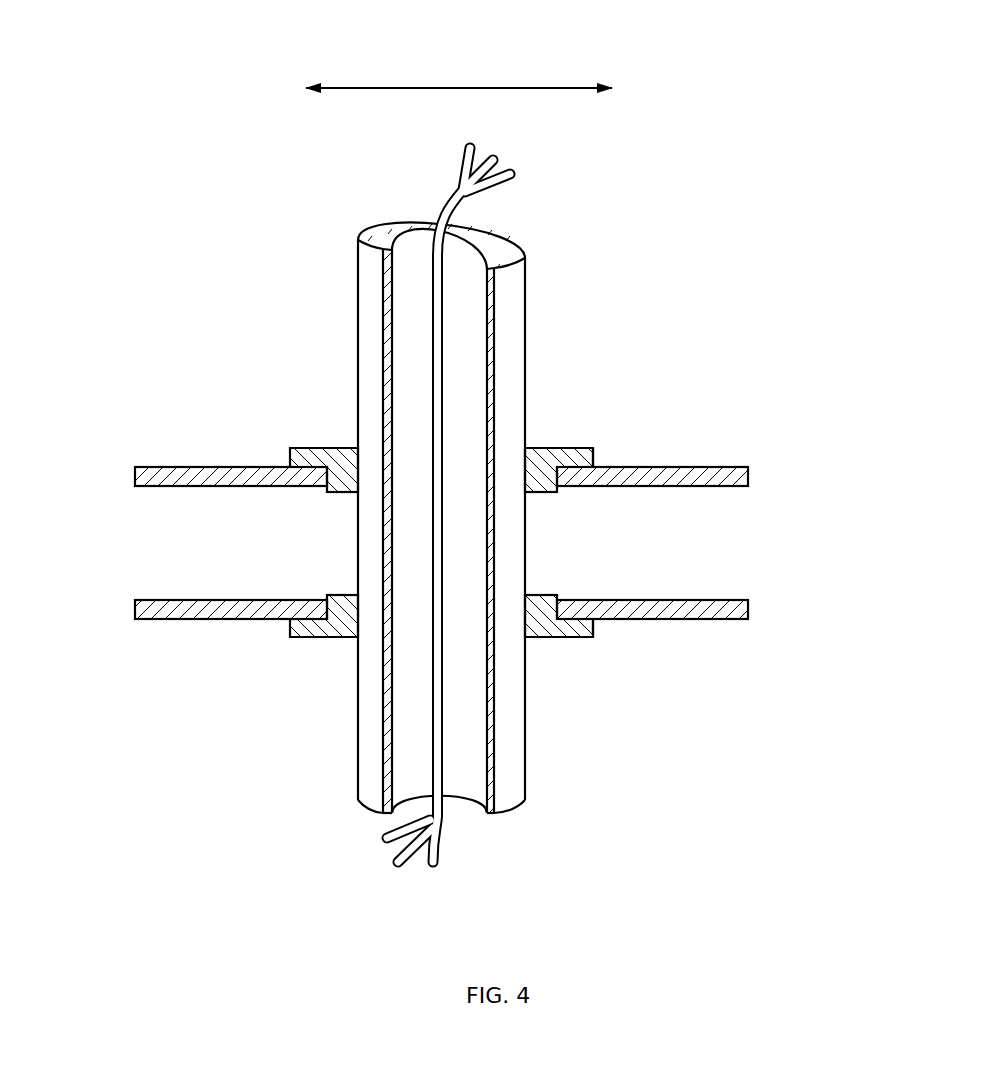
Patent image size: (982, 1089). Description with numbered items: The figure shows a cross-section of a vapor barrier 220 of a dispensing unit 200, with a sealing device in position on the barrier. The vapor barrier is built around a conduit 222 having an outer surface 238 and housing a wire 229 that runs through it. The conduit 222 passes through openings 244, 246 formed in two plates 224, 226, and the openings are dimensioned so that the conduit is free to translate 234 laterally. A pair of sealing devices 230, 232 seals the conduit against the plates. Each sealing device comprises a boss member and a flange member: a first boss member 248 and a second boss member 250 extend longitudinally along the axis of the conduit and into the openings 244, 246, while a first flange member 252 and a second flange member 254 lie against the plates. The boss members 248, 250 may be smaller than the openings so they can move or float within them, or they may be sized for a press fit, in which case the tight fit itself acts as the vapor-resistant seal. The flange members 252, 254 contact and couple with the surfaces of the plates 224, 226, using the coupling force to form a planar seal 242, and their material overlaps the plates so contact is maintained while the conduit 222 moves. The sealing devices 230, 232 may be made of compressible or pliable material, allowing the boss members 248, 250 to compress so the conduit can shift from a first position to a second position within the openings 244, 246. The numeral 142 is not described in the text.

The dispensing unit 200 is at (745, 93).
The translate 234 is at (455, 88).
The conduit 222 is at (365, 526).
The outer surface 238 is at (368, 730).
The wire 229 is at (467, 207).
The vapor barrier 220 is at (447, 546).
The sealing device 230 is at (483, 452).
The sealing device 232 is at (482, 636).
The plate 224 is at (135, 475).
The plate 226 is at (135, 608).
The opening 244 is at (351, 501).
The opening 246 is at (352, 591).
The first boss member 248 is at (537, 493).
The second boss member 250 is at (537, 593).
The upper collar outer portion 142 is at (605, 455).
The planar seal 242 is at (604, 631).
The first flange member 252 is at (638, 441).
The second flange member 254 is at (638, 619).